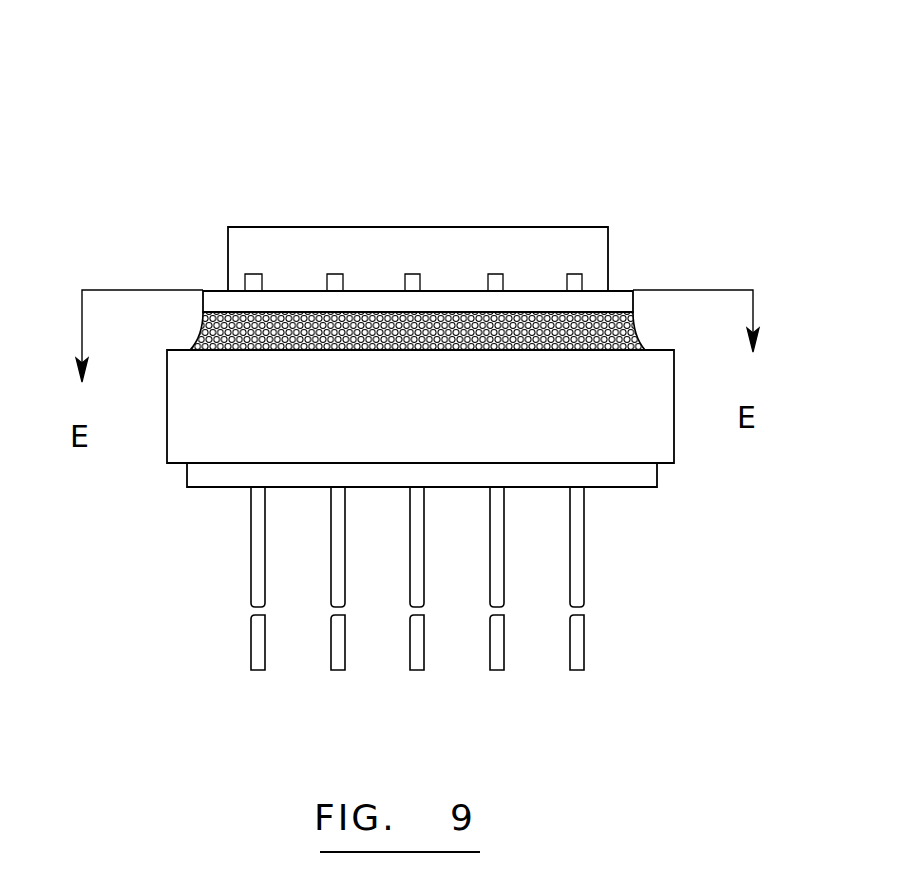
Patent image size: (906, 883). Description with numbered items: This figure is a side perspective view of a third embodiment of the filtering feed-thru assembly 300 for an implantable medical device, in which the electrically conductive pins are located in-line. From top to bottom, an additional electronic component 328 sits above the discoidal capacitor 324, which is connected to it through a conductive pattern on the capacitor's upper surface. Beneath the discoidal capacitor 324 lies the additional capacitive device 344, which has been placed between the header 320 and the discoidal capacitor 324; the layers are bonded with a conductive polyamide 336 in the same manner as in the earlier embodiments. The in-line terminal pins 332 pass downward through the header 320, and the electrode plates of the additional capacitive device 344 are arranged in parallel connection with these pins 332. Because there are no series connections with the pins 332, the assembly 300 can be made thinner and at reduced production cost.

The assembly 300 is at (338, 207).
The additional electronic component 328 is at (533, 217).
The discoidal capacitor 324 is at (634, 305).
The conductive polyamide 336 is at (203, 332).
The additional capacitive device 344 is at (683, 443).
The header 320 is at (662, 483).
The in-line terminal pins 332 is at (248, 590).